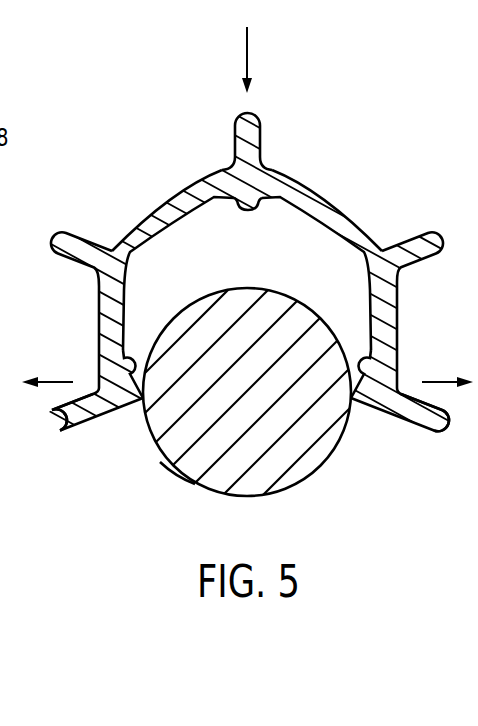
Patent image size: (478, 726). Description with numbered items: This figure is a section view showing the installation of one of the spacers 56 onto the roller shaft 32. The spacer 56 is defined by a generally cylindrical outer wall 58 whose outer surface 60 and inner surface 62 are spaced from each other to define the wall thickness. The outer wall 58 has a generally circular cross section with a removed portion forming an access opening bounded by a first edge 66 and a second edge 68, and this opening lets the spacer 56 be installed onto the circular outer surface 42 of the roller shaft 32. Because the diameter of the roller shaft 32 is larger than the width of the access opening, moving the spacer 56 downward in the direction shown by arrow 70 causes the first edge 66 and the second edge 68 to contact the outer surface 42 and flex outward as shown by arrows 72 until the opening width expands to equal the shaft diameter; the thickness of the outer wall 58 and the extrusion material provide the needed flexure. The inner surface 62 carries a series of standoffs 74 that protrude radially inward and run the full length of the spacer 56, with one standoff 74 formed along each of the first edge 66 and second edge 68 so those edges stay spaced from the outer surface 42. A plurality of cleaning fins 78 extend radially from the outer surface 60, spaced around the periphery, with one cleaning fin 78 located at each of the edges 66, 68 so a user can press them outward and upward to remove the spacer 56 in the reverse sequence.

The roller shaft 32 is at (288, 481).
The outer surface 42 is at (177, 468).
The spacer 56 is at (308, 162).
The outer wall 58 is at (347, 231).
The outer surface 60 is at (170, 197).
The inner surface 62 is at (308, 218).
The first edge 66 is at (108, 414).
The second edge 68 is at (357, 410).
The arrow 70 is at (248, 52).
The arrows 72 is at (49, 377).
The standoffs 74 is at (236, 211).
The cleaning fins 78 is at (238, 126).